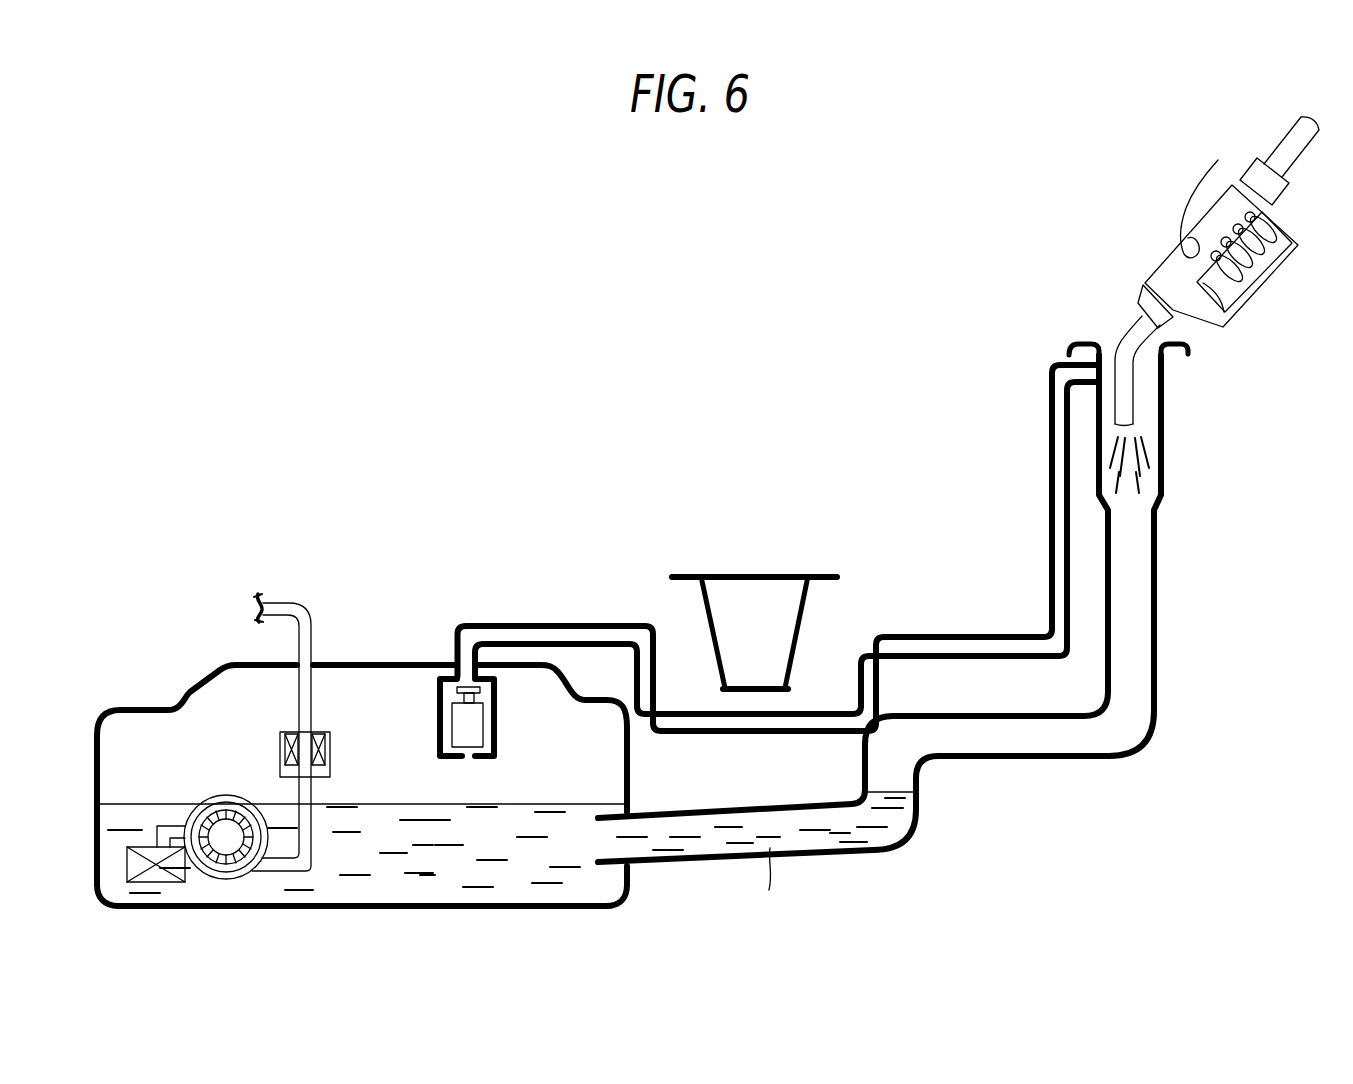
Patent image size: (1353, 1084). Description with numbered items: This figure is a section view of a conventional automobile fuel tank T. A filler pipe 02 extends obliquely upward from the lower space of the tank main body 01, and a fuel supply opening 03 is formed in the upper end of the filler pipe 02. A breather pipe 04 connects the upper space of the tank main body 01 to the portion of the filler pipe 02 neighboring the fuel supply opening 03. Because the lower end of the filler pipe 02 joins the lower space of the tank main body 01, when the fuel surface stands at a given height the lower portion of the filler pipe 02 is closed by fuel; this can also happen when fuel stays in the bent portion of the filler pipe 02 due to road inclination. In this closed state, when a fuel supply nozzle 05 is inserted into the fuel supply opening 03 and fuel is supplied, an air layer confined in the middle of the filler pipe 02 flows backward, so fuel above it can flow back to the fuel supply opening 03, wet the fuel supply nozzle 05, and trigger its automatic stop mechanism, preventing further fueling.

The tank main body 01 is at (212, 678).
The filler pipe 02 is at (1162, 588).
The fuel supply opening 03 is at (1180, 355).
The breather pipe 04 is at (1017, 634).
The fuel supply nozzle 05 is at (1168, 266).
The fuel tank T is at (343, 600).